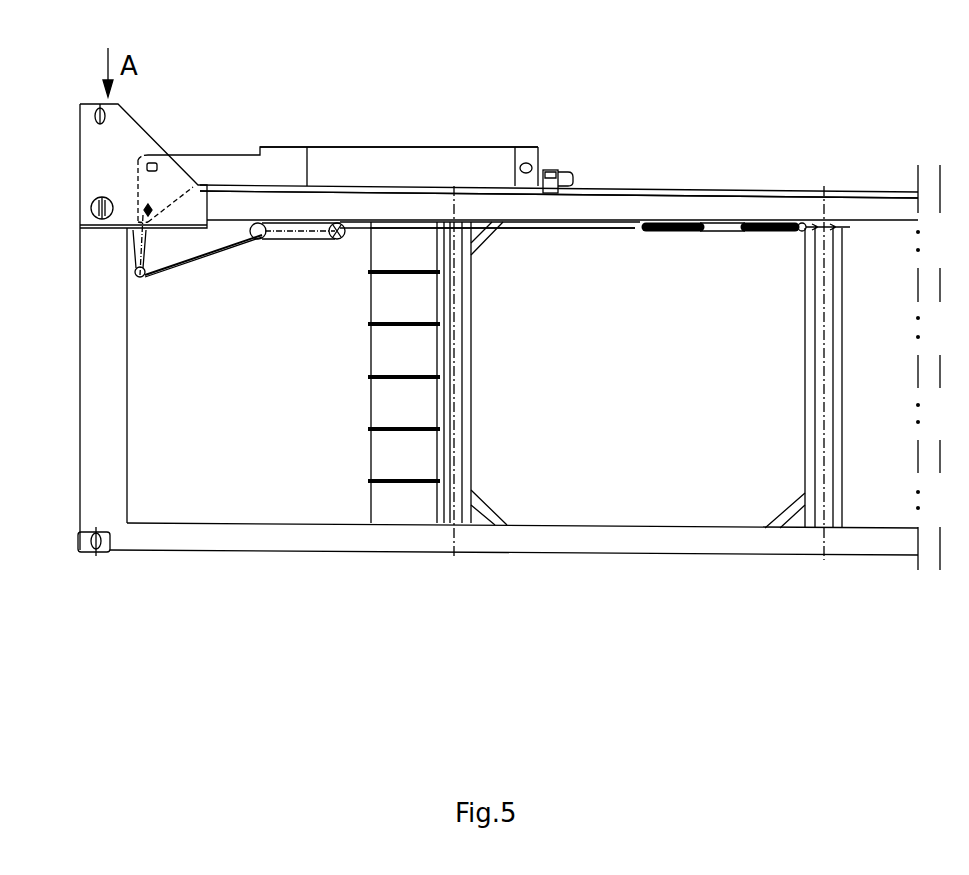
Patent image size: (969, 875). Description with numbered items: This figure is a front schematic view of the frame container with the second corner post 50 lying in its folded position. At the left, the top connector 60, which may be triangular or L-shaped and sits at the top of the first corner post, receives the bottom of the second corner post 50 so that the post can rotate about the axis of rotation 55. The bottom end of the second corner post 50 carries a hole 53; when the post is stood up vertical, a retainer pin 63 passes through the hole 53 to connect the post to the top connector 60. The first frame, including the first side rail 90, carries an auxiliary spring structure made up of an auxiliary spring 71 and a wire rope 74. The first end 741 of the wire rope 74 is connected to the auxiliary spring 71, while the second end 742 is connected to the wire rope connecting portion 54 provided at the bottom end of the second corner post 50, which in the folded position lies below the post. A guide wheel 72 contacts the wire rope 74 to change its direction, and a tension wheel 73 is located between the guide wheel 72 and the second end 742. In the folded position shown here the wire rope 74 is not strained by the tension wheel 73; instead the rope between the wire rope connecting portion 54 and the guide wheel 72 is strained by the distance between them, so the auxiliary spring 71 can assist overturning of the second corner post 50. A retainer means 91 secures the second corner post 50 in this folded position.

The second corner post 50 is at (402, 175).
The hole 53 is at (148, 163).
The wire rope connecting portion 54 is at (133, 243).
The axis of rotation 55 is at (148, 208).
The top connector 60 is at (100, 100).
The retainer pin 63 is at (100, 203).
The auxiliary spring 71 is at (673, 224).
The guide wheel 72 is at (335, 238).
The tension wheel 73 is at (258, 243).
The wire rope 74 is at (595, 222).
The first end of the wire rope 741 is at (633, 228).
The second end of the wire rope 742 is at (165, 268).
The first side rail 90 is at (778, 210).
The retainer means 91 is at (553, 185).